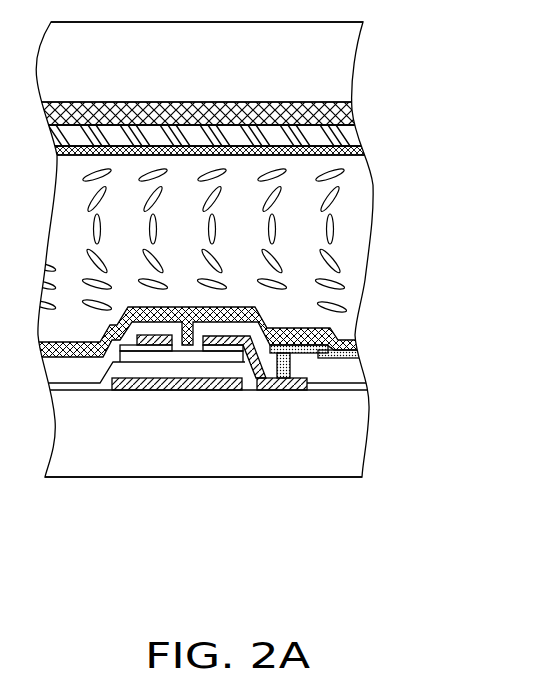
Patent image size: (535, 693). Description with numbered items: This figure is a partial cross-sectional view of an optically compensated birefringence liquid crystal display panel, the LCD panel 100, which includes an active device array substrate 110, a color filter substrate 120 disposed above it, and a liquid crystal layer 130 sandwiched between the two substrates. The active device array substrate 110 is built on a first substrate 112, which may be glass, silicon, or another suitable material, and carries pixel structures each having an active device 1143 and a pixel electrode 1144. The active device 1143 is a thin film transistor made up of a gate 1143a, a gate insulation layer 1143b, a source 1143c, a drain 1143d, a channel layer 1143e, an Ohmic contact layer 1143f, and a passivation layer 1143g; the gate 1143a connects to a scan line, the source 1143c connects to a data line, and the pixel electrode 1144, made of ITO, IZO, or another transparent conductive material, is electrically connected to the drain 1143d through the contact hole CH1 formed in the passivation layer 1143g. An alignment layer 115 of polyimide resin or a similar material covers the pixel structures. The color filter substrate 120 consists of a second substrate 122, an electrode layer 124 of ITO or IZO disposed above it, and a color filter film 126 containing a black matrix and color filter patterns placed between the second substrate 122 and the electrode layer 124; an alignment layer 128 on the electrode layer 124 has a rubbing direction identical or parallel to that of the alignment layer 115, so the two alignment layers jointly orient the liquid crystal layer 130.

The LCD panel 100 is at (504, 564).
The active device array substrate 110 is at (247, 448).
The first substrate 112 is at (362, 448).
The alignment layer 115 is at (360, 348).
The color filter substrate 120 is at (273, 106).
The second substrate 122 is at (330, 68).
The electrode layer 124 is at (355, 137).
The color filter film 126 is at (352, 119).
The alignment layer 128 is at (250, 168).
The liquid crystal layer 130 is at (343, 280).
The active device 1143 is at (205, 468).
The gate 1143a is at (190, 357).
The gate insulation layer 1143b is at (316, 468).
The source 1143c is at (147, 335).
The drain 1143d is at (262, 380).
The channel layer 1143e is at (163, 357).
The Ohmic contact layer 1143f is at (215, 348).
The passivation layer 1143g is at (92, 373).
The pixel electrode 1144 is at (357, 357).
The contact hole CH1 is at (376, 310).